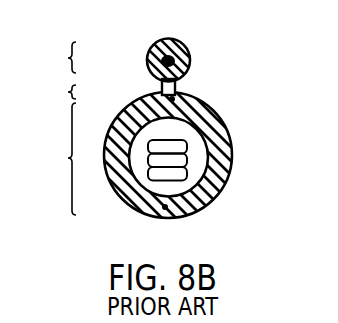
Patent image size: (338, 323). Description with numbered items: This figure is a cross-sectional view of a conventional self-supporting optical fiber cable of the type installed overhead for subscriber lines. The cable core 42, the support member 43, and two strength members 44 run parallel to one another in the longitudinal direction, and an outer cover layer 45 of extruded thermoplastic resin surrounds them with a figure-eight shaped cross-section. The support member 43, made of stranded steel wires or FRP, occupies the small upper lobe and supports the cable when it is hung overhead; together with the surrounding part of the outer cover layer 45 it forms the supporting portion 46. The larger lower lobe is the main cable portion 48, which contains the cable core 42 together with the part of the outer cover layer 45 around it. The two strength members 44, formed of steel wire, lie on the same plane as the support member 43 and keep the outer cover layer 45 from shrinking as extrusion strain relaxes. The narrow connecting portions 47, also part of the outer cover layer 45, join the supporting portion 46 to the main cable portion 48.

The cable core 42 is at (188, 162).
The support member 43 is at (184, 46).
The strength members 44 is at (193, 98).
The outer cover layer 45 is at (230, 186).
The supporting portion 46 is at (57, 57).
The connecting portions 47 is at (57, 92).
The main cable portion 48 is at (55, 159).